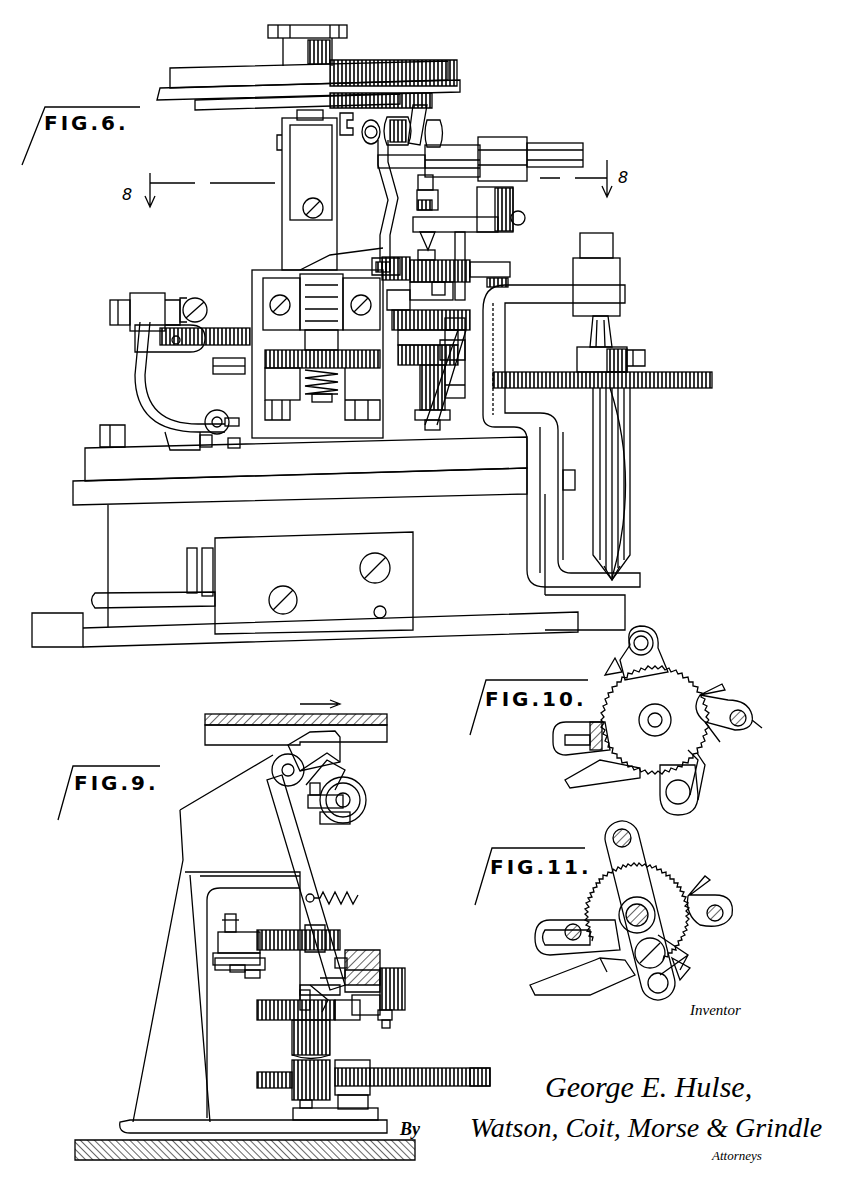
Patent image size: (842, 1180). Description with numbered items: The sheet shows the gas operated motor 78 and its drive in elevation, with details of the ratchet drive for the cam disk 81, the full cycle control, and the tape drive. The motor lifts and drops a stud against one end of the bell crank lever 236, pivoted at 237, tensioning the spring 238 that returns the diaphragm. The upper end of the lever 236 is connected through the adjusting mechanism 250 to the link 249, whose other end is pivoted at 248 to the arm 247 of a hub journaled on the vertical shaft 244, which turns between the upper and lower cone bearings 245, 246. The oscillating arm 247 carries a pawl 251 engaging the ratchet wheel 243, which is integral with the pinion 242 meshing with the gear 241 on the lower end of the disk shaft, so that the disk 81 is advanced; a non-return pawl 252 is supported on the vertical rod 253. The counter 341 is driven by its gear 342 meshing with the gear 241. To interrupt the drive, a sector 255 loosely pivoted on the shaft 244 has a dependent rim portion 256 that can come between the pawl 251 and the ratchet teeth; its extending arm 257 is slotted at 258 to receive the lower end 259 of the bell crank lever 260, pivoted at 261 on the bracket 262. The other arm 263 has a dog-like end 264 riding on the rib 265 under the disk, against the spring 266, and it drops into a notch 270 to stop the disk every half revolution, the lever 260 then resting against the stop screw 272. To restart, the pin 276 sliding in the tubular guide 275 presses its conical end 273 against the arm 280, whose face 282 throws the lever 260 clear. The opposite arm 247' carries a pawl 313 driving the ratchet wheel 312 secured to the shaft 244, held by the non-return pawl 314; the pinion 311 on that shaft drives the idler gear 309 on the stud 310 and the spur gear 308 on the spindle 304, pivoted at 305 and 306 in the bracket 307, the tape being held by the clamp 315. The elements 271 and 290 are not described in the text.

In FIG. 6, the gas operated motor 78 is at (118, 540).
In FIG. 6, the cam disk 81 is at (160, 93).
In FIG. 9, the cam disk 81 is at (230, 715).
In FIG. 6, the bell crank lever 236 is at (142, 380).
In FIG. 6, the pivot 237 is at (215, 435).
In FIG. 6, the spring 238 is at (202, 345).
In FIG. 6, the gear 241 is at (240, 375).
In FIG. 6, the pinion 242 is at (352, 380).
In FIG. 9, the pinion 242 is at (292, 1045).
In FIG. 6, the ratchet wheel 243 is at (345, 360).
In FIG. 9, the ratchet wheel 243 is at (260, 1008).
In FIG. 11, the ratchet wheel 243 is at (663, 870).
In FIG. 6, the vertical shaft 244 is at (440, 258).
In FIG. 10, the vertical shaft 244 is at (655, 715).
In FIG. 11, the vertical shaft 244 is at (648, 905).
In FIG. 6, the upper cone bearing 245 is at (438, 228).
In FIG. 9, the lower cone bearing 246 is at (305, 1110).
In FIG. 6, the arm 247 is at (491, 357).
In FIG. 9, the arm 247 is at (420, 983).
In FIG. 10, the arm 247 is at (702, 790).
In FIG. 11, the arm 247 is at (634, 997).
In FIG. 9, the arm 247' is at (185, 973).
In FIG. 10, the arm 247' is at (673, 651).
In FIG. 11, the arm 247' is at (611, 909).
In FIG. 6, the pivot 248 is at (508, 285).
In FIG. 9, the pivot 248 is at (368, 950).
In FIG. 11, the pivot 248 is at (668, 950).
In FIG. 6, the link 249 is at (222, 285).
In FIG. 9, the link 249 is at (385, 962).
In FIG. 10, the link 249 is at (565, 786).
In FIG. 11, the link 249 is at (565, 990).
In FIG. 6, the adjusting mechanism 250 is at (168, 300).
In FIG. 6, the pawl 251 is at (450, 345).
In FIG. 9, the pawl 251 is at (395, 1000).
In FIG. 11, the pawl 251 is at (688, 975).
In FIG. 11, the non-return pawl 252 is at (715, 905).
In FIG. 11, the vertical rod 253 is at (723, 915).
In FIG. 11, the sector 255 is at (605, 975).
In FIG. 6, the dependent rim portion 256 is at (455, 370).
In FIG. 9, the dependent rim portion 256 is at (352, 1010).
In FIG. 10, the dependent rim portion 256 is at (698, 770).
In FIG. 11, the dependent rim portion 256 is at (690, 962).
In FIG. 9, the extending arm 257 is at (300, 990).
In FIG. 10, the extending arm 257 is at (553, 735).
In FIG. 11, the extending arm 257 is at (538, 935).
In FIG. 10, the slot 258 is at (565, 742).
In FIG. 11, the slot 258 is at (552, 942).
In FIG. 9, the lower end 259 is at (322, 1000).
In FIG. 11, the lower end 259 is at (572, 925).
In FIG. 6, the bell crank lever 260 is at (375, 200).
In FIG. 9, the bell crank lever 260 is at (300, 850).
In FIG. 10, the bell crank lever 260 is at (590, 730).
In FIG. 6, the pivot 261 is at (372, 125).
In FIG. 9, the pivot 261 is at (280, 780).
In FIG. 9, the bracket 262 is at (198, 830).
In FIG. 6, the arm 263 is at (432, 130).
In FIG. 9, the arm 263 is at (340, 772).
In FIG. 10, the arm 263 is at (722, 740).
In FIG. 6, the dog-like end 264 is at (420, 112).
In FIG. 9, the dog-like end 264 is at (345, 758).
In FIG. 6, the rib 265 is at (203, 105).
In FIG. 9, the rib 265 is at (222, 740).
In FIG. 9, the spring 266 is at (350, 893).
In FIG. 9, the notch 270 is at (320, 730).
In FIG. 9, the cam 271 is at (345, 740).
In FIG. 6, the stop screw 272 is at (372, 226).
In FIG. 9, the conical end 273 is at (343, 800).
In FIG. 6, the tubular guide 275 is at (495, 140).
In FIG. 9, the tubular guide 275 is at (362, 815).
In FIG. 6, the pin 276 is at (556, 150).
In FIG. 6, the arm 280 is at (380, 160).
In FIG. 9, the arm 280 is at (340, 818).
In FIG. 9, the face 282 is at (315, 805).
In FIG. 6, the top plate 290 is at (237, 58).
In FIG. 6, the spindle 304 is at (615, 450).
In FIG. 6, the pivot 305 is at (625, 568).
In FIG. 6, the pivot 306 is at (605, 330).
In FIG. 6, the bracket 307 is at (498, 405).
In FIG. 6, the spur gear 308 is at (670, 375).
In FIG. 9, the spur gear 308 is at (468, 1066).
In FIG. 9, the idler gear 309 is at (425, 1068).
In FIG. 9, the stud 310 is at (352, 1075).
In FIG. 6, the pinion 311 is at (405, 375).
In FIG. 9, the pinion 311 is at (300, 1092).
In FIG. 6, the ratchet wheel 312 is at (480, 262).
In FIG. 9, the ratchet wheel 312 is at (350, 932).
In FIG. 10, the ratchet wheel 312 is at (680, 680).
In FIG. 9, the pawl 313 is at (222, 942).
In FIG. 10, the pawl 313 is at (625, 662).
In FIG. 6, the non-return pawl 314 is at (505, 275).
In FIG. 10, the non-return pawl 314 is at (730, 705).
In FIG. 6, the clamp 315 is at (632, 488).
In FIG. 6, the counter 341 is at (290, 275).
In FIG. 6, the gear 342 is at (281, 394).